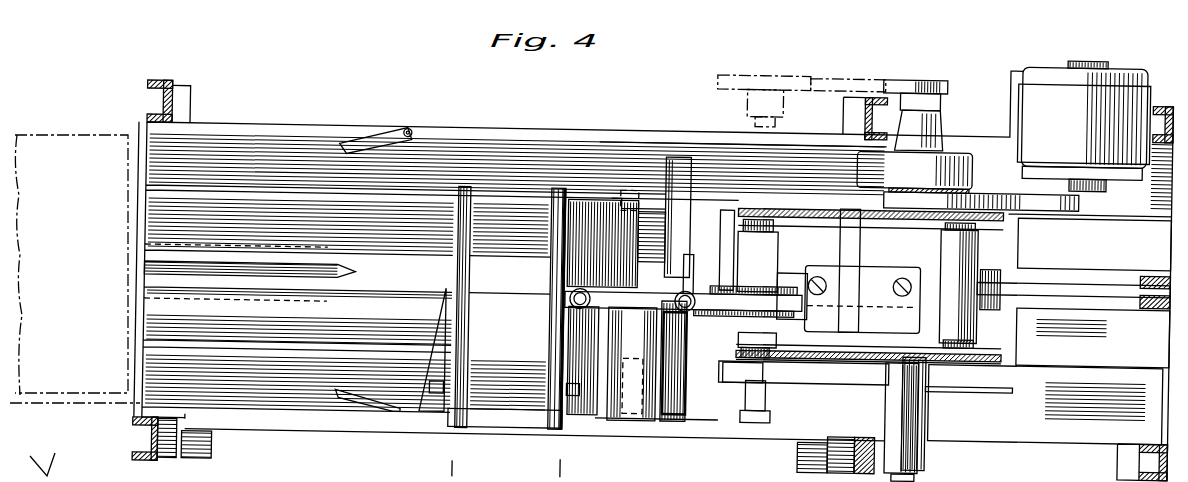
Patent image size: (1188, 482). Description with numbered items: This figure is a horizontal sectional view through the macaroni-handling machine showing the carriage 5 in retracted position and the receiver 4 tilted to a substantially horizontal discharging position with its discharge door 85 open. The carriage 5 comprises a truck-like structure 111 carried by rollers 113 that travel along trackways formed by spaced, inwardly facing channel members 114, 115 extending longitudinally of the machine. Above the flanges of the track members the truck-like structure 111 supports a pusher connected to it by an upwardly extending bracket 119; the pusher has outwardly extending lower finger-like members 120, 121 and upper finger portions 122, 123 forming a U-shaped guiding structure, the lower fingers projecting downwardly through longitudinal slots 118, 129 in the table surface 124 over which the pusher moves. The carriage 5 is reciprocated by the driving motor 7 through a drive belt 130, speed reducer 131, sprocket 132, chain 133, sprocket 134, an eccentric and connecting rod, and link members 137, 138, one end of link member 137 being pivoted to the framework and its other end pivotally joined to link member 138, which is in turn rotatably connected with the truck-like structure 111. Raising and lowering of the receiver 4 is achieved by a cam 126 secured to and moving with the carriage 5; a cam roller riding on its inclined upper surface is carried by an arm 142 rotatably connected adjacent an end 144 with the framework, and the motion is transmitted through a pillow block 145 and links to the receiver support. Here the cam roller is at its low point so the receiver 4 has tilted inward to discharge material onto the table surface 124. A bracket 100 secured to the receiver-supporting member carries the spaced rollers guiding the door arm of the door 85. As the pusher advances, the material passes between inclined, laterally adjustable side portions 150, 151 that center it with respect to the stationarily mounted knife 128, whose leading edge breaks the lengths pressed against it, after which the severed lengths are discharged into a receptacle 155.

The receiver 4 is at (472, 275).
The carriage 5 is at (128, 270).
The driving motor 7 is at (1110, 83).
The discharge door 85 is at (587, 199).
The bracket 100 is at (652, 386).
The truck-like structure 111 is at (896, 276).
The rollers 113 is at (775, 233).
The channel member 114 is at (1002, 346).
The channel member 115 is at (884, 210).
The longitudinal slot 118 is at (300, 353).
The bracket 119 is at (705, 260).
The lower finger-like member 120 is at (650, 404).
The lower finger-like member 121 is at (640, 225).
The finger portion 122 is at (620, 412).
The finger portion 123 is at (633, 181).
The table surface 124 is at (267, 151).
The cam 126 is at (1000, 382).
The stationary knife 128 is at (360, 268).
The longitudinal slot 129 is at (437, 177).
The drive belt 130 is at (1005, 180).
The speed reducer 131 is at (857, 158).
The sprocket 132 is at (928, 59).
The chain 133 is at (840, 61).
The sprocket 134 is at (767, 64).
The link member 137 is at (1140, 290).
The link member 138 is at (1053, 272).
The arm 142 is at (840, 361).
The arm end 144 is at (918, 400).
The pillow block 145 is at (750, 362).
The side portion 150 is at (352, 400).
The side portion 151 is at (383, 126).
The receptacle 155 is at (86, 114).